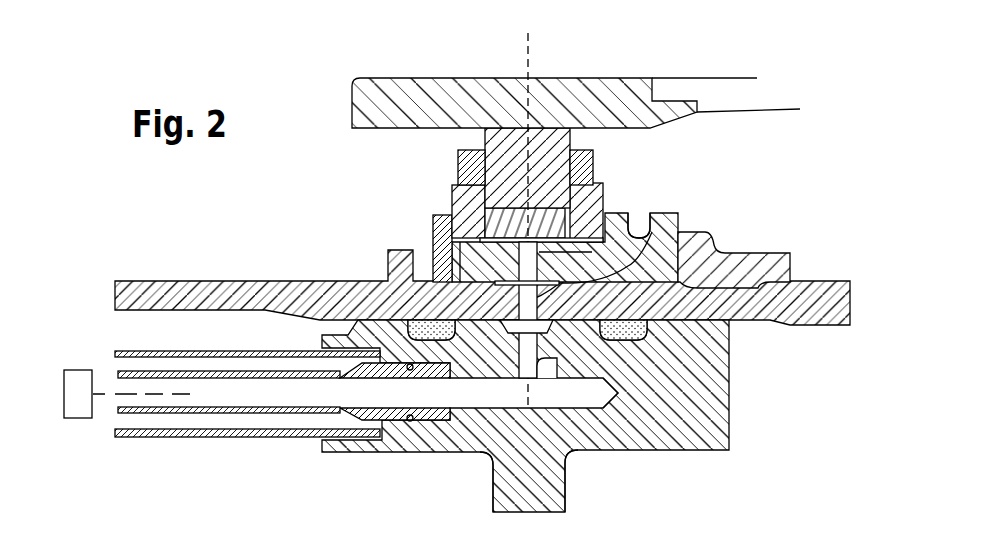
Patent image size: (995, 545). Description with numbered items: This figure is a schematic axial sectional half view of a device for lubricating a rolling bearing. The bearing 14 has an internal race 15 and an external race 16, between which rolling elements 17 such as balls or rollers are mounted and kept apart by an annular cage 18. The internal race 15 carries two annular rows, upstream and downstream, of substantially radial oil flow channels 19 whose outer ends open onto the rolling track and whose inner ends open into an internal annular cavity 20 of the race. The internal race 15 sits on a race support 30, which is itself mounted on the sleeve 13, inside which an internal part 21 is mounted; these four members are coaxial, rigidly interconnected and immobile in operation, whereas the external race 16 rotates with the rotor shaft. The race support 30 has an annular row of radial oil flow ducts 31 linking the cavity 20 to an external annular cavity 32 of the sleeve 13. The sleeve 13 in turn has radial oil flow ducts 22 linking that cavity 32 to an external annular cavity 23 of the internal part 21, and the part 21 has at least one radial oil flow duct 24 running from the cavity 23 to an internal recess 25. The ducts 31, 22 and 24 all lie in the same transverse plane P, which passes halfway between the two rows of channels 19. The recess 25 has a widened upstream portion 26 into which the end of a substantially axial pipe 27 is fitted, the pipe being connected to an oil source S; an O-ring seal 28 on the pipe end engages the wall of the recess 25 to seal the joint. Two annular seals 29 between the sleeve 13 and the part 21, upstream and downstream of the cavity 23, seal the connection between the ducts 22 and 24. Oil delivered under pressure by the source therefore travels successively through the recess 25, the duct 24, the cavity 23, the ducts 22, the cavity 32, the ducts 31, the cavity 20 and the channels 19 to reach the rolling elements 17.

The sleeve 13 is at (172, 294).
The bearing 14 is at (320, 218).
The internal race 15 is at (462, 180).
The external race 16 is at (433, 98).
The rolling elements 17 is at (549, 143).
The annular cage 18 is at (572, 237).
The oil flow channels 19 is at (480, 230).
The internal annular cavity 20 is at (567, 222).
The internal part 21 is at (715, 418).
The oil flow ducts 22 is at (432, 248).
The external annular cavity 23 is at (613, 393).
The oil flow duct 24 is at (542, 392).
The internal recess 25 is at (545, 432).
The widened upstream portion 26 is at (433, 417).
The pipe 27 is at (227, 420).
The O-ring seal 28 is at (410, 421).
The annular seals 29 is at (420, 322).
The race support 30 is at (640, 212).
The oil flow ducts 31 is at (652, 232).
The external annular cavity 32 is at (692, 250).
The transverse plane P is at (531, 62).